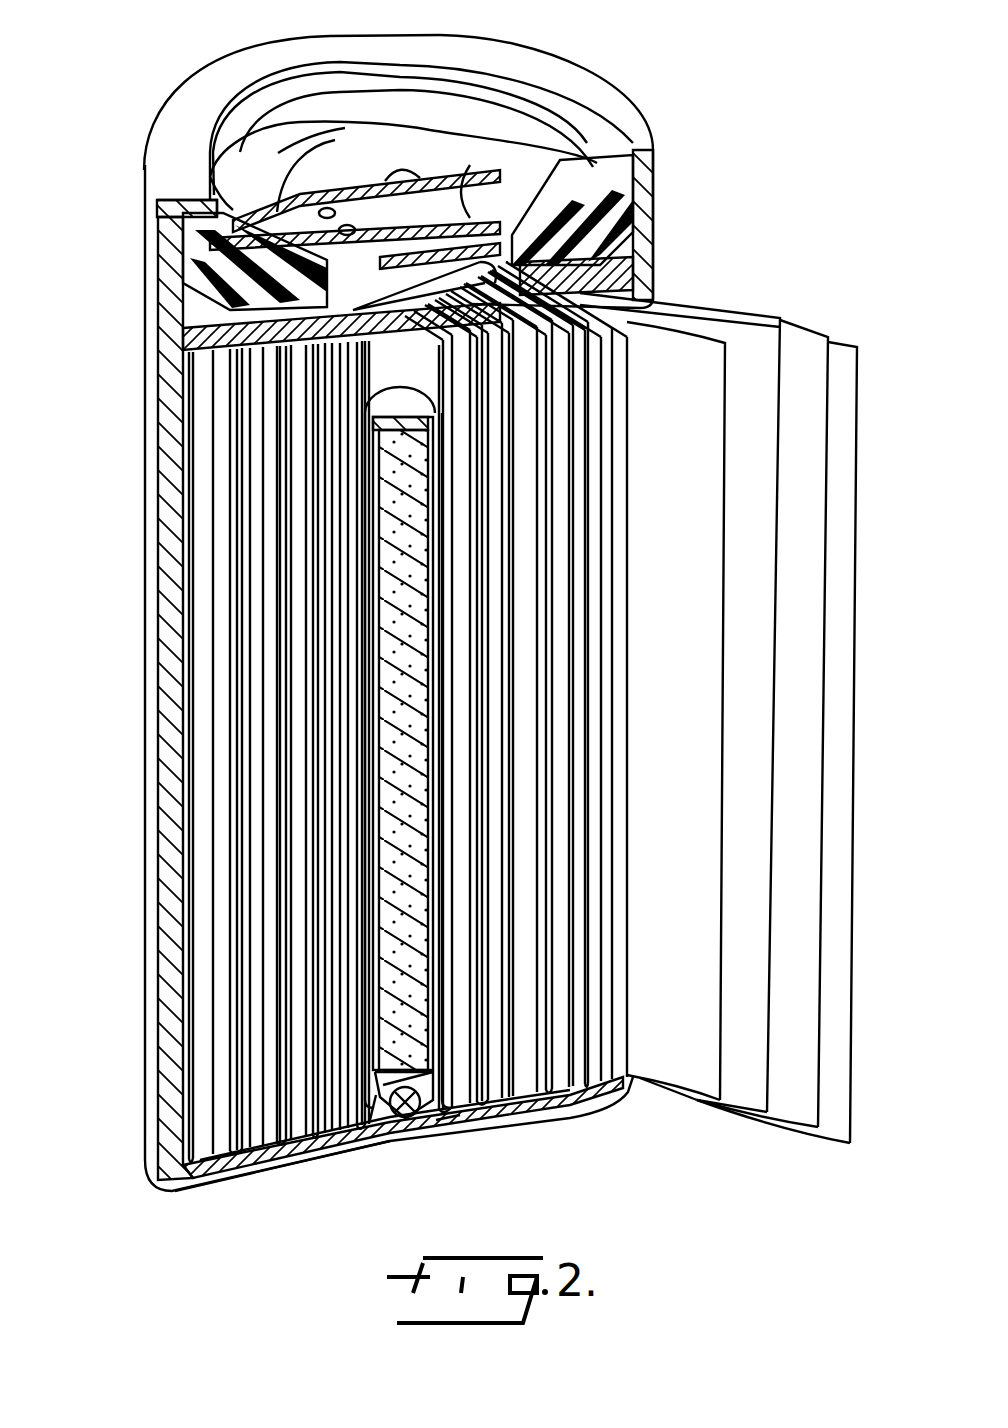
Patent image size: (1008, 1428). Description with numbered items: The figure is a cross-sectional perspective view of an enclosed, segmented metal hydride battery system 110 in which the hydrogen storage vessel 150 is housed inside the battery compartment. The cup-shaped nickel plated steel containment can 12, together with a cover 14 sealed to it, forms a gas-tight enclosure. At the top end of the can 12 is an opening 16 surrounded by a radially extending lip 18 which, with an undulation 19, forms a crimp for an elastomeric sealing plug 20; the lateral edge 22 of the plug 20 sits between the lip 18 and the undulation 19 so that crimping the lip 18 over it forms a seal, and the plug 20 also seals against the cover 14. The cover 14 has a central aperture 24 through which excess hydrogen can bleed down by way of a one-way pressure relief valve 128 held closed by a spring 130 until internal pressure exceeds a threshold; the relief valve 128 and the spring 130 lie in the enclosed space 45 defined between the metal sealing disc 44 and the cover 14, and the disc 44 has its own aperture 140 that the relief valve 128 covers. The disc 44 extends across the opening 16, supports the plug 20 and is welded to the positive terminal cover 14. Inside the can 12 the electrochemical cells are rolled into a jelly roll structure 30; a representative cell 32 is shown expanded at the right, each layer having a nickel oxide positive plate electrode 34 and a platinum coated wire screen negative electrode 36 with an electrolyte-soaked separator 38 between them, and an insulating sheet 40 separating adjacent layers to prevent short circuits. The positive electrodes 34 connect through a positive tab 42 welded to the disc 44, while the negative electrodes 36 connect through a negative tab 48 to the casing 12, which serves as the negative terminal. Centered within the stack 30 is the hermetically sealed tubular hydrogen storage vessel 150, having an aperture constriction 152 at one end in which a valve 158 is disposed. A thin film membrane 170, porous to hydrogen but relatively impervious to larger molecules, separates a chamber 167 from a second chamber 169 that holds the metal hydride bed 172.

The containment can 12 is at (168, 820).
The cover 14 is at (347, 140).
The opening 16 is at (212, 178).
The lip 18 is at (517, 88).
The undulation 19 is at (230, 315).
The elastomeric sealing plug 20 is at (593, 240).
The lateral edge 22 is at (200, 250).
The aperture 24 is at (407, 165).
The jelly roll structure 30 is at (237, 1167).
The electrochemical cell 32 is at (704, 1118).
The positive plate electrode 34 is at (743, 1093).
The negative electrode 36 is at (837, 1054).
The separator 38 is at (806, 978).
The insulating sheet 40 is at (667, 1080).
The positive tab 42 is at (292, 356).
The sealing disc 44 is at (638, 166).
The enclosed space 45 is at (480, 187).
The negative tab 48 is at (340, 1133).
The battery system 110 is at (122, 741).
The one-way pressure relief valve 128 is at (303, 160).
The spring 130 is at (483, 170).
The aperture 140 is at (397, 212).
The hydrogen storage vessel 150 is at (420, 385).
The aperture constriction 152 is at (436, 1127).
The valve 158 is at (398, 1112).
The chamber 167 is at (376, 1095).
The second chamber 169 is at (540, 1132).
The thin film membrane 170 is at (383, 1085).
The metal hydride bed 172 is at (390, 948).